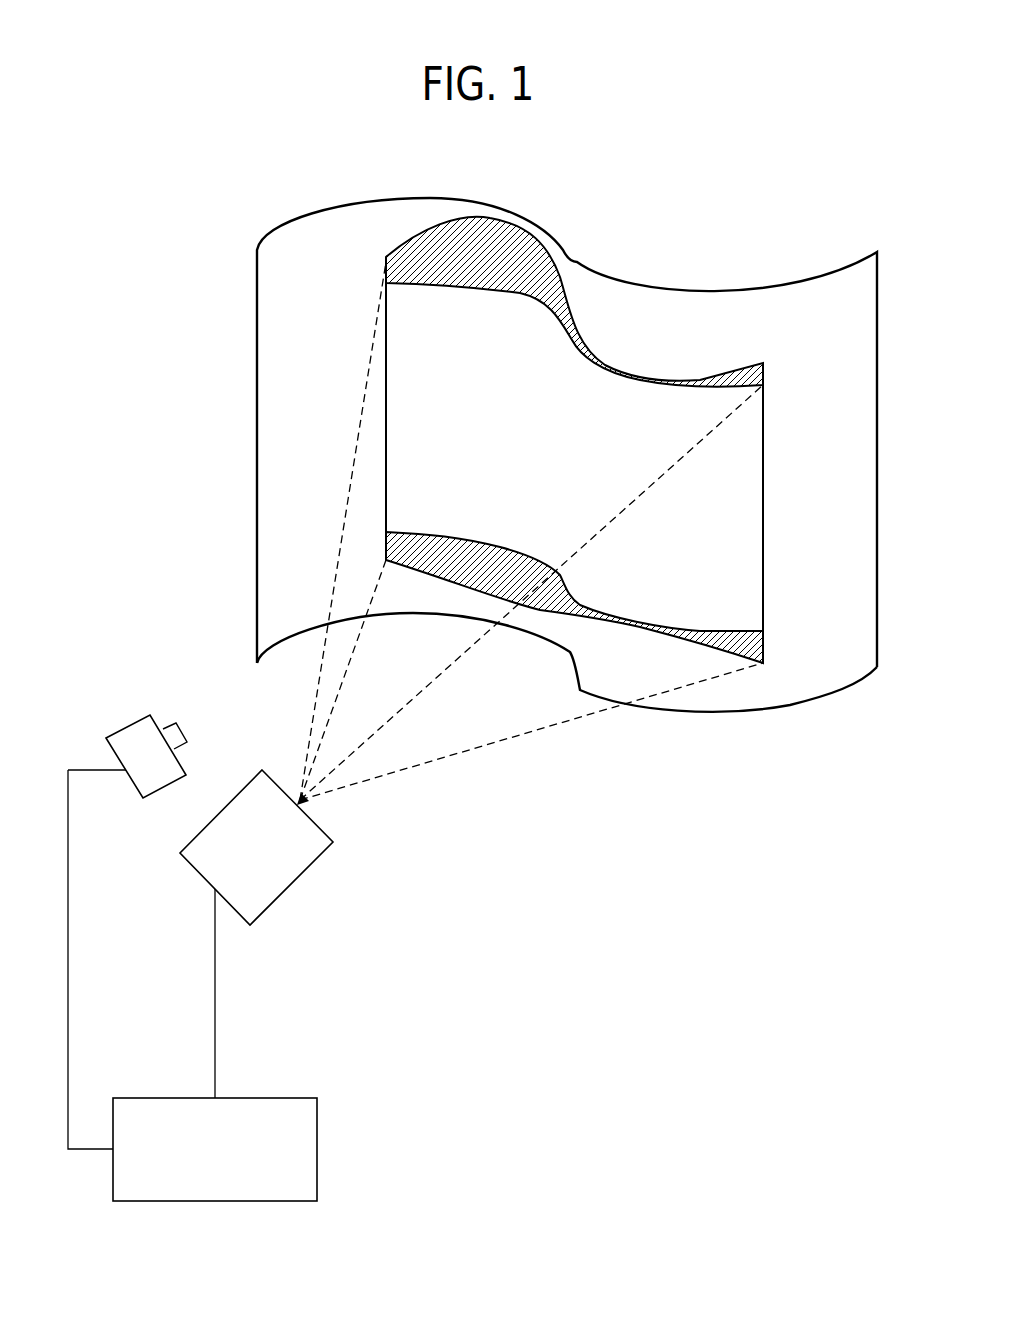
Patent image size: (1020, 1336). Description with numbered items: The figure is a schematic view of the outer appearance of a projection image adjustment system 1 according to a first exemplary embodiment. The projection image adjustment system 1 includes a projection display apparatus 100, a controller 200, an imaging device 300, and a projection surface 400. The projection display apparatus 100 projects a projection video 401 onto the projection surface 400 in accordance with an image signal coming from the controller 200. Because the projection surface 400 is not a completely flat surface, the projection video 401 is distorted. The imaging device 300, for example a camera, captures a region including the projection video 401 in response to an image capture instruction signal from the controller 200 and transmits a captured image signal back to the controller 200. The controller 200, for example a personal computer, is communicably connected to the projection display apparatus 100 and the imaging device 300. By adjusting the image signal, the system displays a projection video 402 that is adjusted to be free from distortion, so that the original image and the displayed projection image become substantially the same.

The projection image adjustment system 1 is at (90, 176).
The projection display apparatus 100 is at (295, 883).
The controller 200 is at (317, 1148).
The imaging device 300 is at (127, 730).
The projection surface 400 is at (575, 260).
The projection video 401 is at (443, 260).
The projection video adjusted to be free from distortion 402 is at (443, 425).